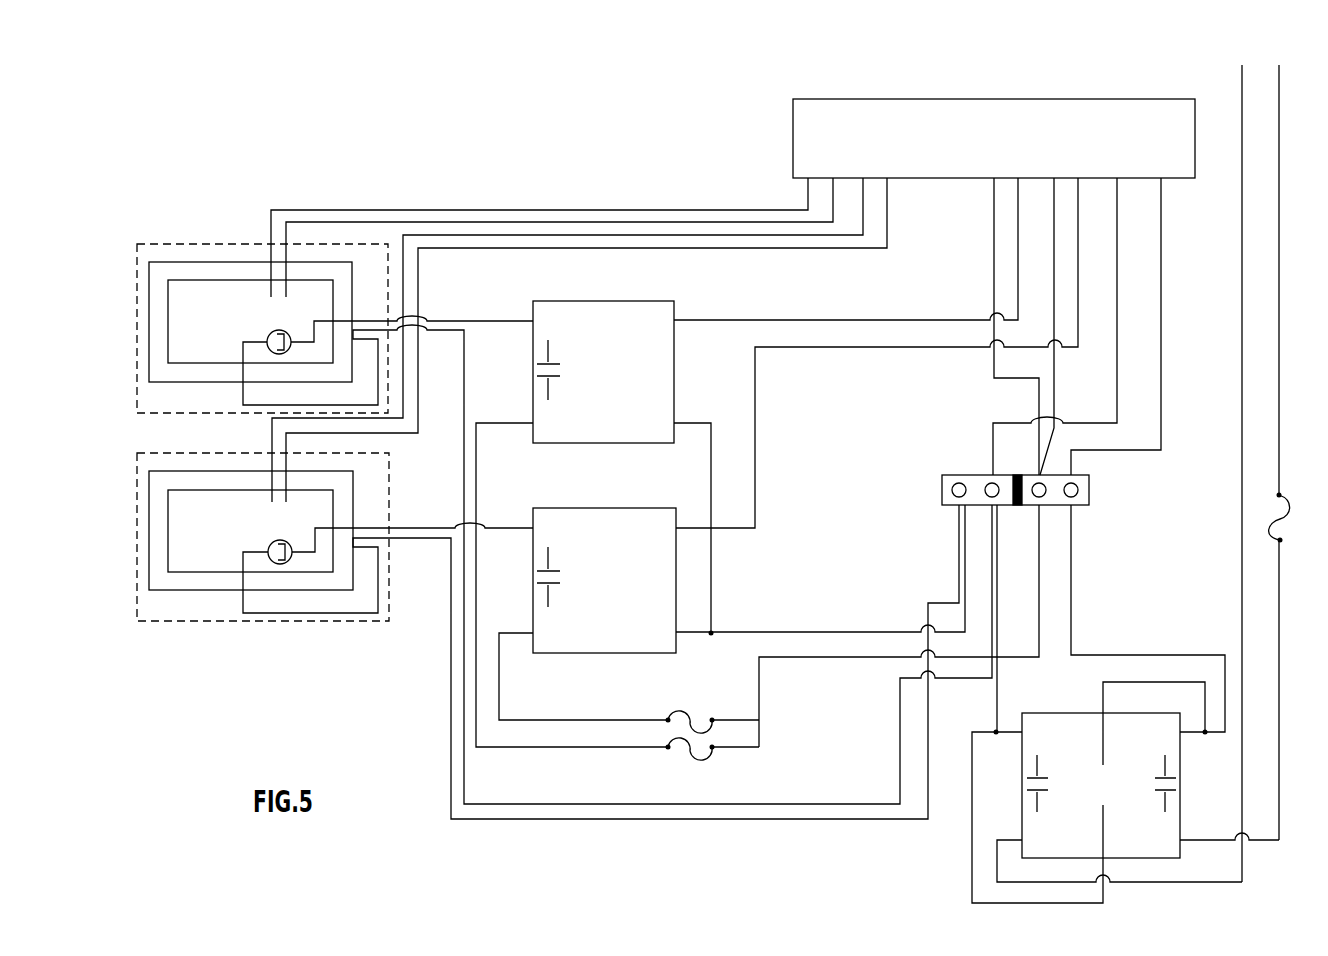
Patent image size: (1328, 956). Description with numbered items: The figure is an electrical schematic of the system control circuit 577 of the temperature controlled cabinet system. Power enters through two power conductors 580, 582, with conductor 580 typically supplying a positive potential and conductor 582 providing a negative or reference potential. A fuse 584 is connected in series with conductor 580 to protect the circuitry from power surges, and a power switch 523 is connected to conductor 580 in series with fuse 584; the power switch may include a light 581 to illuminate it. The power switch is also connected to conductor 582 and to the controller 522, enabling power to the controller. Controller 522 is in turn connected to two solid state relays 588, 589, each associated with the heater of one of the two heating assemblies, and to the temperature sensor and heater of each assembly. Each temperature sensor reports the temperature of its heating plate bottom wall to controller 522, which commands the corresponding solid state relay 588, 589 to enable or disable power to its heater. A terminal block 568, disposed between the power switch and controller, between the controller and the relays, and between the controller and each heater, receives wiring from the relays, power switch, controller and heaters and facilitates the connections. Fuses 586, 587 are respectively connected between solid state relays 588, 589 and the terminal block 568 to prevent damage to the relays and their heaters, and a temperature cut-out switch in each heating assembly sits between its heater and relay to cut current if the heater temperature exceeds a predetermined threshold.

The system control circuit 577 is at (748, 122).
The controller 522 is at (792, 138).
The solid state relay 588 is at (623, 301).
The solid state relay 589 is at (590, 508).
The fuse 587 is at (680, 708).
The fuse 586 is at (700, 733).
The terminal block 568 is at (954, 476).
The light 581 is at (1094, 770).
The power switch 523 is at (1180, 760).
The power conductor 582 is at (1240, 309).
The power conductor 580 is at (1280, 254).
The fuse 584 is at (1297, 514).